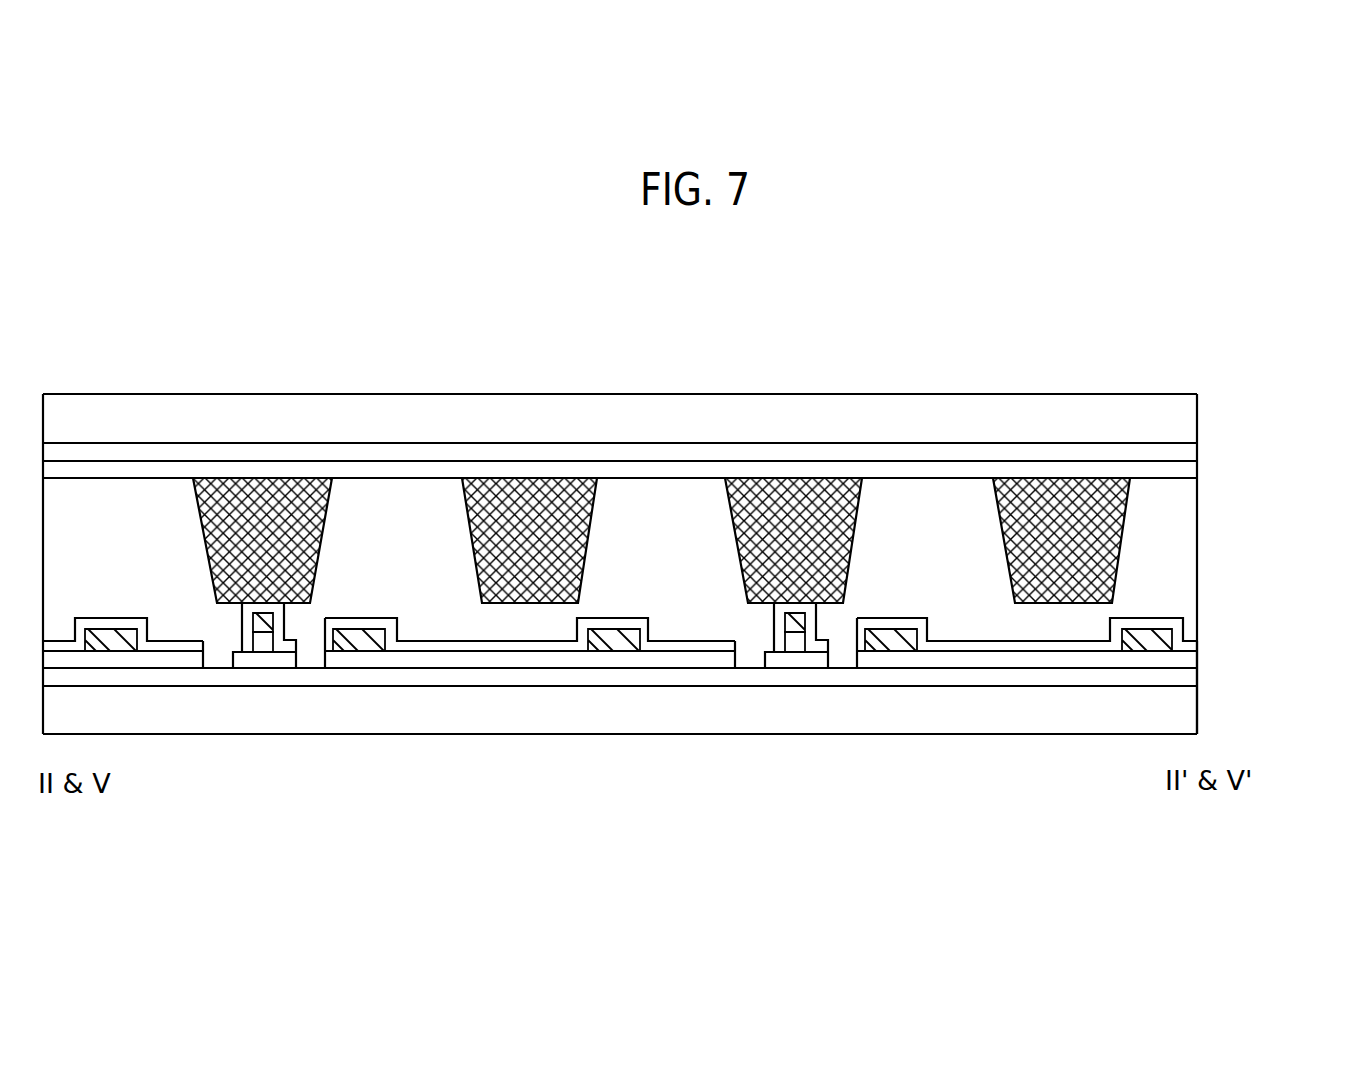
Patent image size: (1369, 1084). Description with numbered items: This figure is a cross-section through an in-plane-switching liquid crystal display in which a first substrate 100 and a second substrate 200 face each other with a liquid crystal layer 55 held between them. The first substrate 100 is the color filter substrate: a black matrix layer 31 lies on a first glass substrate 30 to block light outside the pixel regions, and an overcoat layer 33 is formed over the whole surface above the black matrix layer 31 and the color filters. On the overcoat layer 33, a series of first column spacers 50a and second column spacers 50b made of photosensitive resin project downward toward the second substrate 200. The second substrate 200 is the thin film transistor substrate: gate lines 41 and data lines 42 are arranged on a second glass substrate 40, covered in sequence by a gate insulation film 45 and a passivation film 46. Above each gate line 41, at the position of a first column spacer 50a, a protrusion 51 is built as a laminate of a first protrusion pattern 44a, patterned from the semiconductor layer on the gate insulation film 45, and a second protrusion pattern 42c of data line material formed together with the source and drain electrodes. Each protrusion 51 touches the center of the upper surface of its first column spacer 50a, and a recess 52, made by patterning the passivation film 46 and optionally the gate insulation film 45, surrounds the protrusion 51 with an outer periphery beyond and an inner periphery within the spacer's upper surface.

The first glass substrate 30 is at (1187, 425).
The black matrix layer 31 is at (1187, 456).
The overcoat layer 33 is at (1187, 470).
The first substrate 100 is at (1280, 403).
The liquid crystal layer 55 is at (1188, 571).
The first column spacer 50a is at (322, 538).
The second column spacer 50b is at (570, 538).
The passivation film 46 is at (436, 640).
The data line 42 is at (600, 634).
The second protrusion pattern 42c is at (253, 622).
The first protrusion pattern 44a is at (255, 645).
The gate insulation film 45 is at (1188, 661).
The gate line 41 is at (1190, 676).
The second glass substrate 40 is at (1113, 725).
The second substrate 200 is at (1286, 635).
The recess 52 is at (1040, 750).
The protrusion 51 is at (459, 614).